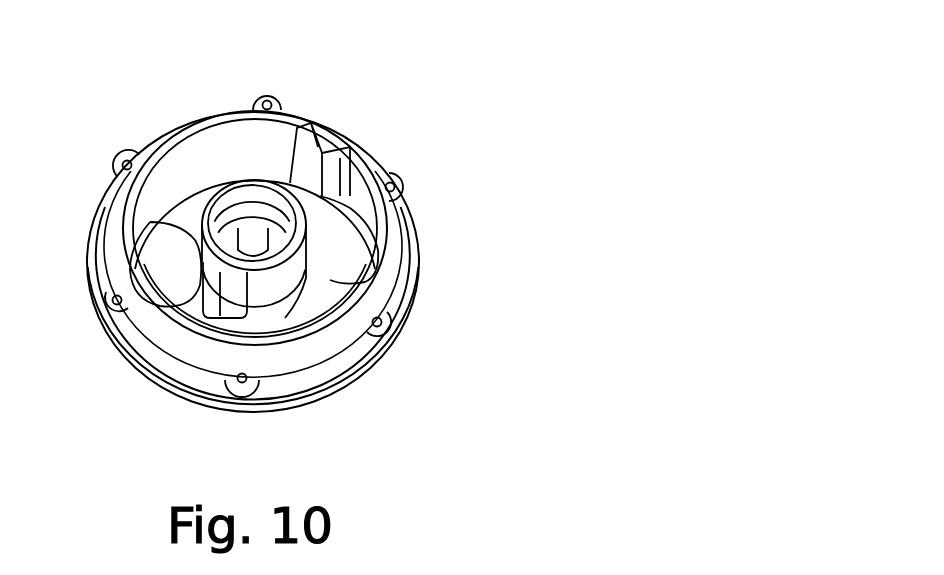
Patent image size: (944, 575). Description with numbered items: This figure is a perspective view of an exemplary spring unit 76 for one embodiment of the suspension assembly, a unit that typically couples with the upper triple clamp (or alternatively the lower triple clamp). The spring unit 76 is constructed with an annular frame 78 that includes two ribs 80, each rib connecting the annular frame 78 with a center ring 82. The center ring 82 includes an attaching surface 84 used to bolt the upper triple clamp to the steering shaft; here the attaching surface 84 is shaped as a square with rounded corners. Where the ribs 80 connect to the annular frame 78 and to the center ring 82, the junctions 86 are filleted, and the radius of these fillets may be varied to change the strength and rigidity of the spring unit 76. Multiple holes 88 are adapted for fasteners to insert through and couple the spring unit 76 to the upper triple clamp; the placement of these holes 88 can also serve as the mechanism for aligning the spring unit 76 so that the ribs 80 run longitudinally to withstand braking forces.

The spring unit 76 is at (455, 128).
The annular frame 78 is at (377, 265).
The ribs 80 is at (199, 295).
The center ring 82 is at (291, 283).
The attaching surface 84 is at (271, 217).
The junctions 86 is at (303, 133).
The holes 88 is at (266, 100).